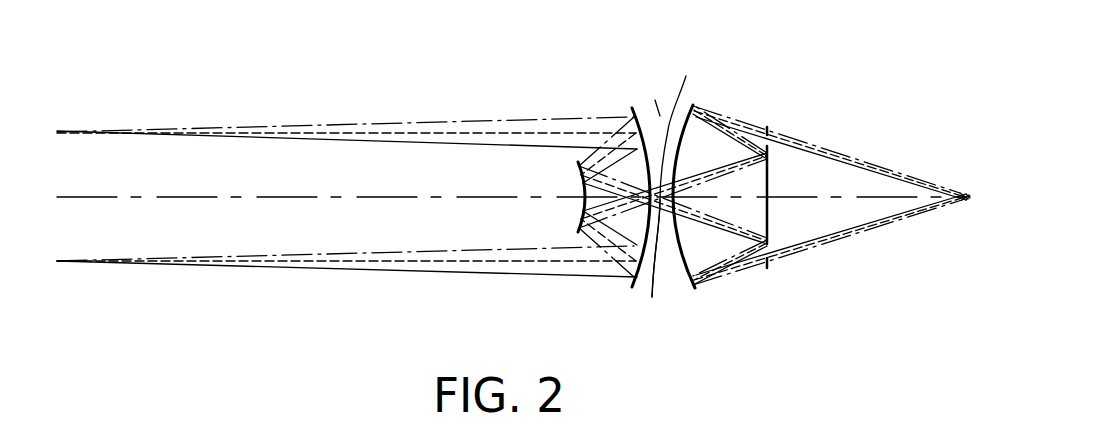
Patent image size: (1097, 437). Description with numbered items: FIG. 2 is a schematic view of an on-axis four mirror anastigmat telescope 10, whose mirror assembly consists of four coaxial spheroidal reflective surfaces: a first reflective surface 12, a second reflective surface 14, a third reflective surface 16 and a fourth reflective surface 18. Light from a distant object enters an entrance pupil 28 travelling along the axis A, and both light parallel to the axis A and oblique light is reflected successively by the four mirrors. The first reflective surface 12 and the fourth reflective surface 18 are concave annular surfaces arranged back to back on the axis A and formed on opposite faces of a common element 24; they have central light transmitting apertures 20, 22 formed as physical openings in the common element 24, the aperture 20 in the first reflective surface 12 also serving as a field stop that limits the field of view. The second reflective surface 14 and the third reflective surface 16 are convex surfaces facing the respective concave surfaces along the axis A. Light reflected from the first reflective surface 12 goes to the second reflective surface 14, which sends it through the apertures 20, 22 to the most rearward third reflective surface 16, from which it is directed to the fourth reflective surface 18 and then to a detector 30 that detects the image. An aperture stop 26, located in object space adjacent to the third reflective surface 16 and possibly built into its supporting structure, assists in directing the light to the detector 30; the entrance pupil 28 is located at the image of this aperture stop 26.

The on-axis four mirror anastigmat telescope 10 is at (772, 198).
The first reflective surface 12 is at (652, 171).
The second reflective surface 14 is at (584, 205).
The third reflective surface 16 is at (763, 207).
The fourth reflective surface 18 is at (683, 140).
The central light transmitting aperture 20 is at (652, 264).
The central light transmitting aperture 22 is at (675, 174).
The common element 24 is at (660, 112).
The aperture stop 26 is at (773, 140).
The entrance pupil 28 is at (127, 263).
The detector 30 is at (965, 193).
The axis A is at (280, 200).